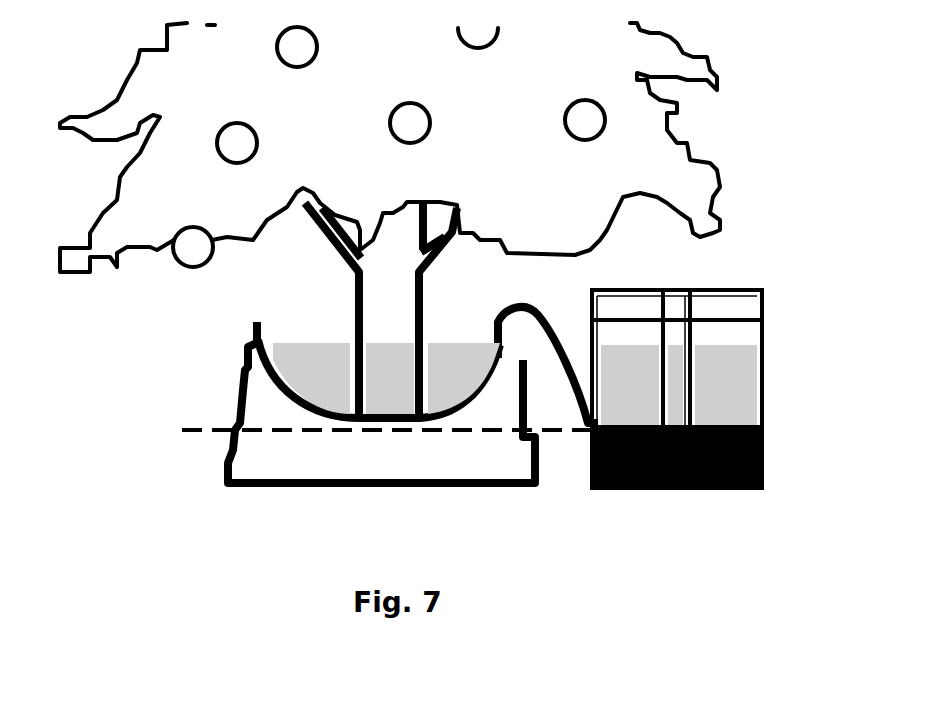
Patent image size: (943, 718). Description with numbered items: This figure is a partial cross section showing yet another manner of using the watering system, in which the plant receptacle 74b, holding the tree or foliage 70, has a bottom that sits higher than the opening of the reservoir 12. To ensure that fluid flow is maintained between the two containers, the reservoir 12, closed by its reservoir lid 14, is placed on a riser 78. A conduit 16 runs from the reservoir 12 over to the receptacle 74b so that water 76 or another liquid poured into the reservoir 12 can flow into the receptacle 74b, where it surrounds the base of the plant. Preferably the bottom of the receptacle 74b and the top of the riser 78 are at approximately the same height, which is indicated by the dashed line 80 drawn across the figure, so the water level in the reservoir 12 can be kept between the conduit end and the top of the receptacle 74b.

The plant canopy / foliage 70 is at (573, 57).
The conduit 16 is at (537, 313).
The reservoir lid 14 is at (763, 303).
The reservoir 12 is at (763, 342).
The water 76 is at (335, 375).
The riser 78 is at (763, 464).
The receptacle 74b is at (237, 393).
The dashed line 80 is at (222, 431).